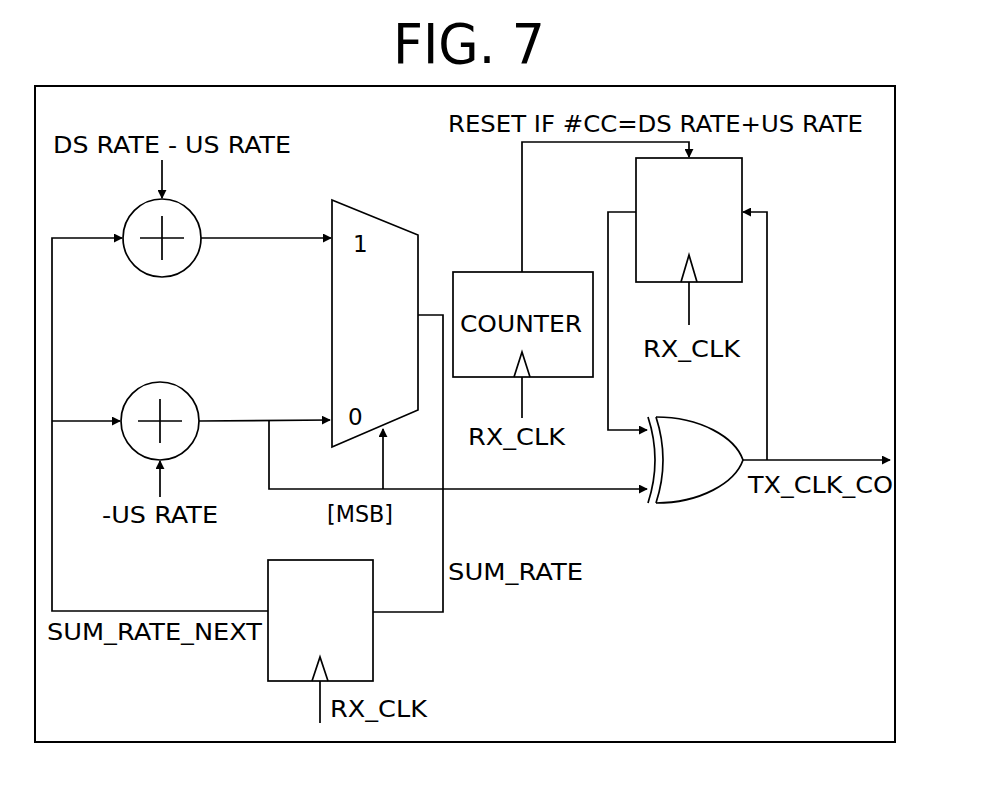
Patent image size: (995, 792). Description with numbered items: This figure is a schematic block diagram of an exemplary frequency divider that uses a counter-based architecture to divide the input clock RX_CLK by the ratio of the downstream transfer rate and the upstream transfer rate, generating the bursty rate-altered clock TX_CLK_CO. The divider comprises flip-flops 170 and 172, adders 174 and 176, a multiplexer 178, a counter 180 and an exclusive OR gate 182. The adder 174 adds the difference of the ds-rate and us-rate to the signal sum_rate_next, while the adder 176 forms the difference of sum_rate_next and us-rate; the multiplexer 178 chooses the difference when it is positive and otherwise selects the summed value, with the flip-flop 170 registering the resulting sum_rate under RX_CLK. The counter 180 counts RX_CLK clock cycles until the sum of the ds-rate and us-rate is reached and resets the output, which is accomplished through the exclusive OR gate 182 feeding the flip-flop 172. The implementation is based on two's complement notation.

The flip-flop 170 is at (373, 657).
The flip-flop 172 is at (742, 187).
The adder 174 is at (193, 212).
The adder 176 is at (192, 397).
The multiplexer 178 is at (343, 213).
The counter 180 is at (553, 270).
The exclusive OR gate 182 is at (727, 487).